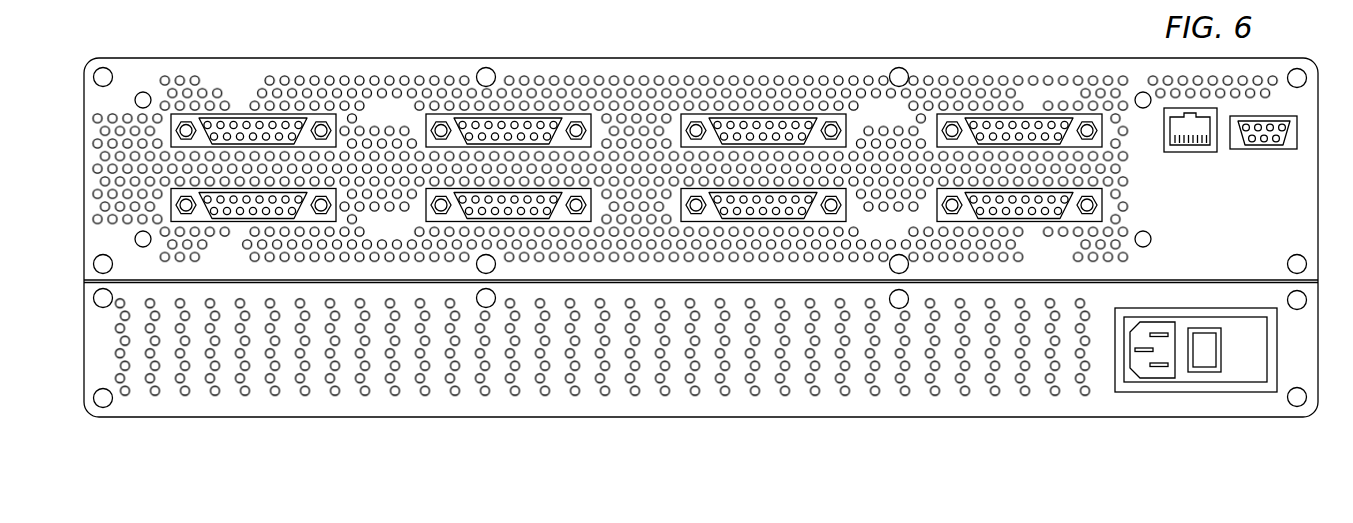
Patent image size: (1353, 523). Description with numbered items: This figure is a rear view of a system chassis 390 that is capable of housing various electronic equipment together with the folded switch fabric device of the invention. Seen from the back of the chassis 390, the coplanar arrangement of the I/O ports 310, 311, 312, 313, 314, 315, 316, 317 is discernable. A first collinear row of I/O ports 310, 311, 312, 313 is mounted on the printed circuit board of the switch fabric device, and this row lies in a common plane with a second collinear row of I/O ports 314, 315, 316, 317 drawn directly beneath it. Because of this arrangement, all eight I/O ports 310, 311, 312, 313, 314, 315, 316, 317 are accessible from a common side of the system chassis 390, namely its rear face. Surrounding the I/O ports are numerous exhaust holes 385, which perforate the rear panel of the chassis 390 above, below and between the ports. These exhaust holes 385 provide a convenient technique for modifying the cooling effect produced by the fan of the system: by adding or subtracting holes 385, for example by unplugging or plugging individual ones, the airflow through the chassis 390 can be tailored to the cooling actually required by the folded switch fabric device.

The I/O port 310 is at (245, 114).
The I/O port 311 is at (426, 117).
The I/O port 312 is at (846, 120).
The I/O port 313 is at (1035, 113).
The I/O port 314 is at (240, 222).
The I/O port 315 is at (426, 219).
The I/O port 316 is at (846, 218).
The I/O port 317 is at (1035, 223).
The exhaust holes 385 is at (1122, 77).
The system chassis 390 is at (543, 57).